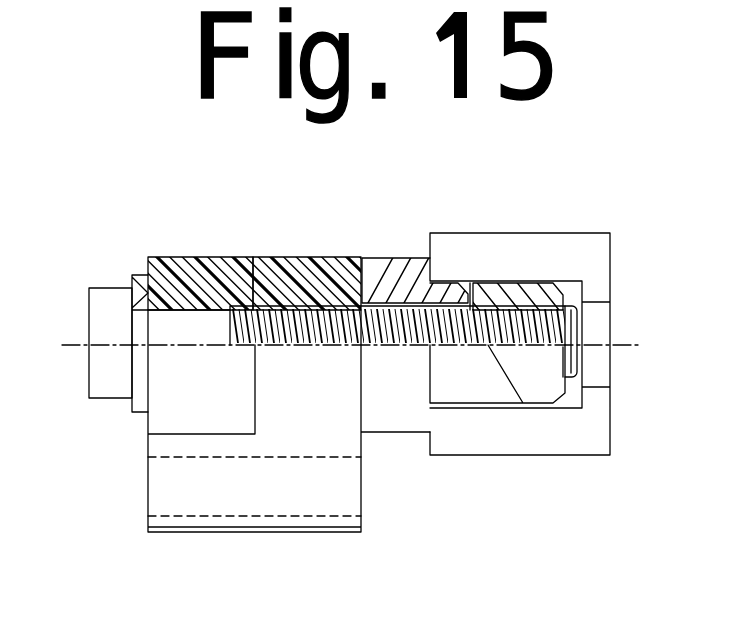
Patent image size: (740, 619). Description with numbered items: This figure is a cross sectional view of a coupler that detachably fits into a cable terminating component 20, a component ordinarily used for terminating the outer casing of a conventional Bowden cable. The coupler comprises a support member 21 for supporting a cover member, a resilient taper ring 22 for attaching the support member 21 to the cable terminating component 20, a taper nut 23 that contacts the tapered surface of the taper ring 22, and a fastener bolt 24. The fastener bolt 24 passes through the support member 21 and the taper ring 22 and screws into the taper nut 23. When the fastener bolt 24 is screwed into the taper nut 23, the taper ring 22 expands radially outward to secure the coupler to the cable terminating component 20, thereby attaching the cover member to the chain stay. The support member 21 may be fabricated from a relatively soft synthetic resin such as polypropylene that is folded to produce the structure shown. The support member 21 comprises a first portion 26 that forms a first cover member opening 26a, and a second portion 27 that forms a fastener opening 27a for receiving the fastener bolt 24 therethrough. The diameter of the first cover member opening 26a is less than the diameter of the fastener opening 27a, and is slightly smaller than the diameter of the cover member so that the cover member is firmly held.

The cable terminating component 20 is at (587, 249).
The support member 21 is at (308, 268).
The resilient taper ring 22 is at (400, 278).
The taper nut 23 is at (525, 293).
The fastener bolt 24 is at (104, 302).
The first portion 26 is at (130, 503).
The first cover member opening 26a is at (317, 513).
The second portion 27 is at (131, 436).
The fastener opening 27a is at (207, 310).